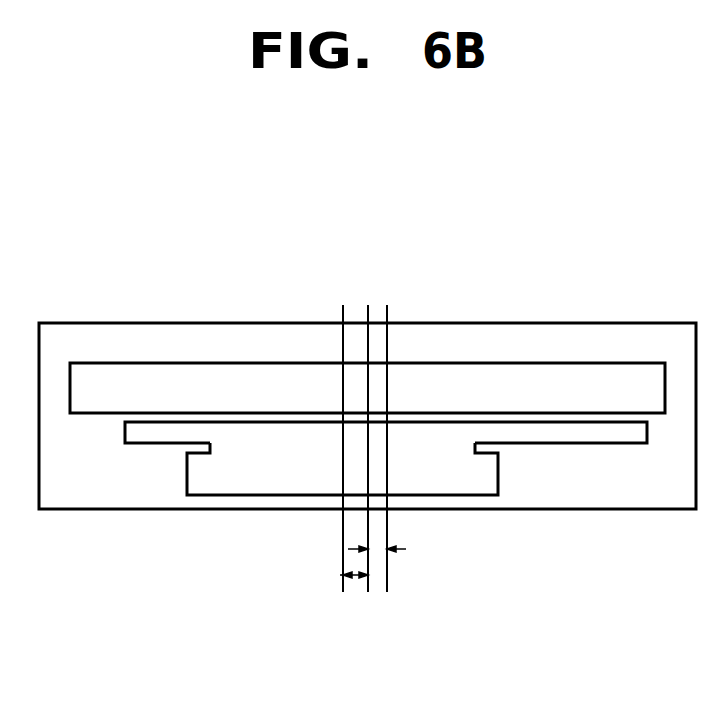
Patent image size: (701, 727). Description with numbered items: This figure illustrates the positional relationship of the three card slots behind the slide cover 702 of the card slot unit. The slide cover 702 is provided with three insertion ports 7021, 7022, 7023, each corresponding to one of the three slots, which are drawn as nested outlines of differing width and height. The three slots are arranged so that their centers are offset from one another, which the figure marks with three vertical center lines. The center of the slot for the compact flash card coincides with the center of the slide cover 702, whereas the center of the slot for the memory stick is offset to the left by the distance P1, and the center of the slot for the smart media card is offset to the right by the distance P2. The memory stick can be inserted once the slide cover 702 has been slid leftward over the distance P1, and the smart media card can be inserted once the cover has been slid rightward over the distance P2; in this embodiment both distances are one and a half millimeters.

The slide cover 702 is at (625, 323).
The insertion port 7021 is at (528, 380).
The insertion port 7022 is at (614, 433).
The insertion port 7023 is at (465, 480).
The distance P1 is at (353, 575).
The distance P2 is at (380, 549).